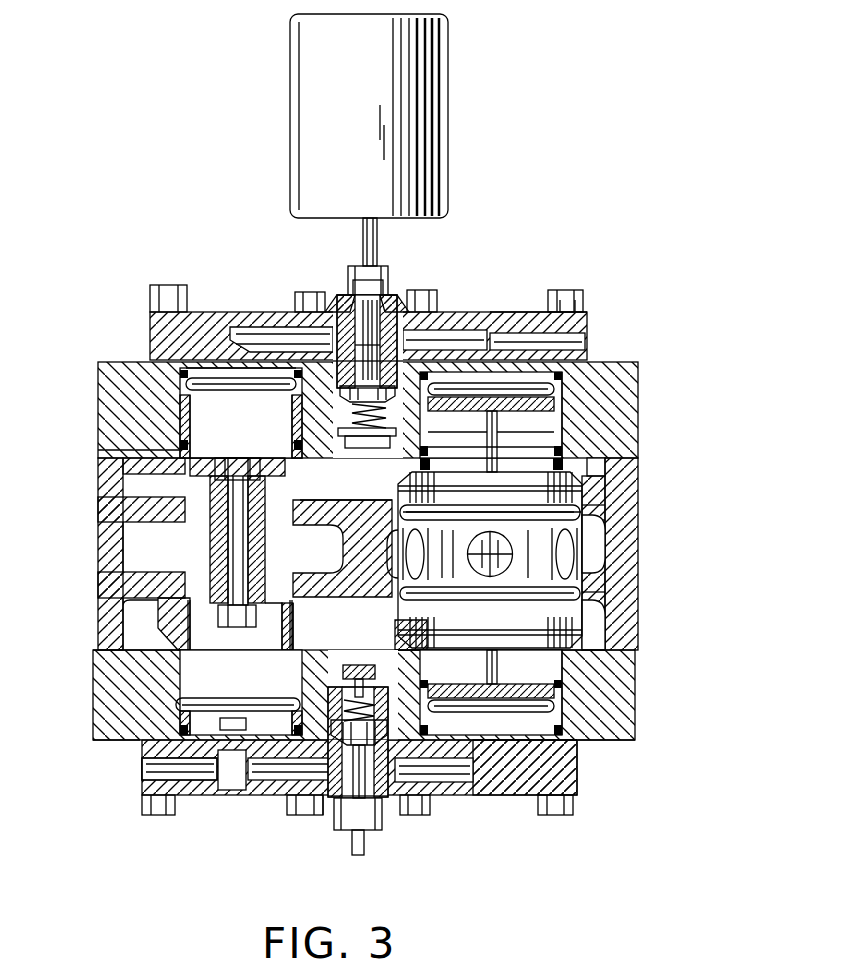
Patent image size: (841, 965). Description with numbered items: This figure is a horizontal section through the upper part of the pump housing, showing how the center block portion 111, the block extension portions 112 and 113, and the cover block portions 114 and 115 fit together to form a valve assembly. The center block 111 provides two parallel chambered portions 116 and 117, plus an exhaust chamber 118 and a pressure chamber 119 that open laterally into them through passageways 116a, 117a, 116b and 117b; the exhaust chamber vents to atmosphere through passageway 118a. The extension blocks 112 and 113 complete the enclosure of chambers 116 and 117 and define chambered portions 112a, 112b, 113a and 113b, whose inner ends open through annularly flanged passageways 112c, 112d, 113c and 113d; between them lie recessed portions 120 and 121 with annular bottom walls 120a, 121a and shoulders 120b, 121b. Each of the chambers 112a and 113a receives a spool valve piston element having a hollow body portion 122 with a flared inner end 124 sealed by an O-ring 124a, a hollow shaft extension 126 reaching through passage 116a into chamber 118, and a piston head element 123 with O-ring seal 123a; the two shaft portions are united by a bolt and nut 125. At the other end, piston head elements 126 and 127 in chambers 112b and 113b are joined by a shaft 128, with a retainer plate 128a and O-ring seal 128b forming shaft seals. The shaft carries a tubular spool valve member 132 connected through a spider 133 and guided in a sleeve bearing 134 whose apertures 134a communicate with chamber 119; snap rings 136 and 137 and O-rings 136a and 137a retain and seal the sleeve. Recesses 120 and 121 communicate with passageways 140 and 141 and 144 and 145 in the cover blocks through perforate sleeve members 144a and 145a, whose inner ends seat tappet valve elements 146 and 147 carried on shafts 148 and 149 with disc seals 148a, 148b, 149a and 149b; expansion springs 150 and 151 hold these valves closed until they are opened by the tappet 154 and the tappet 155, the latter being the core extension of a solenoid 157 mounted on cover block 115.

The center block portion 111 is at (620, 490).
The block extension portion 112 is at (622, 702).
The chambered portion 112a is at (140, 742).
The chambered portion 112b is at (632, 740).
The annularly flanged passageway 112c is at (167, 650).
The annularly flanged passageway 112d is at (627, 717).
The block extension portion 113 is at (628, 398).
The chambered portion 113a is at (198, 368).
The chambered portion 113b is at (565, 398).
The annularly flanged passageway 113c is at (182, 437).
The annularly flanged passageway 113d is at (565, 447).
The cover block portion 114 is at (585, 760).
The cover block portion 115 is at (585, 323).
The chambered portion 116 is at (625, 690).
The passageway 116a is at (117, 580).
The passageway 116b is at (580, 592).
The chambered portion 117 is at (592, 478).
The passageway 117a is at (110, 503).
The passageway 117b is at (600, 530).
The exhaust chamber 118 is at (120, 602).
The passageway 118a is at (110, 533).
The pressure chamber 119 is at (592, 565).
The recessed portion 120 is at (425, 760).
The annular bottom wall portion 120a is at (448, 722).
The shouldered portion 120b is at (285, 718).
The recessed portion 121 is at (440, 370).
The annular bottom wall portion 121a is at (455, 398).
The shouldered portion 121b is at (178, 390).
The hollow body portion 122 is at (192, 668).
The piston head element 123 is at (236, 770).
The O-ring seal 123a is at (185, 715).
The flared inner end 124 is at (287, 628).
The O-ring seal 124a is at (278, 622).
The bolt and nut 125 is at (233, 532).
The hollow shaft extension 126 is at (265, 557).
The piston head element 127 is at (580, 318).
The shaft 128 is at (577, 630).
The retainer plate 128a is at (560, 417).
The O-ring seal 128b is at (560, 432).
The tubular spool valve member 132 is at (425, 467).
The spider 133 is at (410, 624).
The sleeve bearing 134 is at (582, 548).
The apertures 134a is at (398, 500).
The snap ring 136 is at (590, 610).
The O-ring 136a is at (587, 650).
The snap ring 137 is at (600, 510).
The O-ring 137a is at (590, 520).
The passageway 140 is at (230, 748).
The passageway 141 is at (287, 337).
The passageway 144 is at (145, 783).
The perforate sleeve member 144a is at (338, 812).
The passageway 145 is at (242, 353).
The perforate sleeve member 145a is at (382, 305).
The tappet valve element 146 is at (398, 808).
The tappet valve element 147 is at (400, 340).
The shaft 148 is at (352, 820).
The disc seal element 148a is at (375, 830).
The disc seal element 148b is at (355, 667).
The shaft 149 is at (437, 300).
The disc seal element 149a is at (378, 300).
The disc seal element 149b is at (355, 455).
The expansion spring 150 is at (290, 745).
The expansion spring 151 is at (110, 447).
The tappet 154 is at (363, 855).
The tappet 155 is at (355, 236).
The solenoid 157 is at (438, 153).